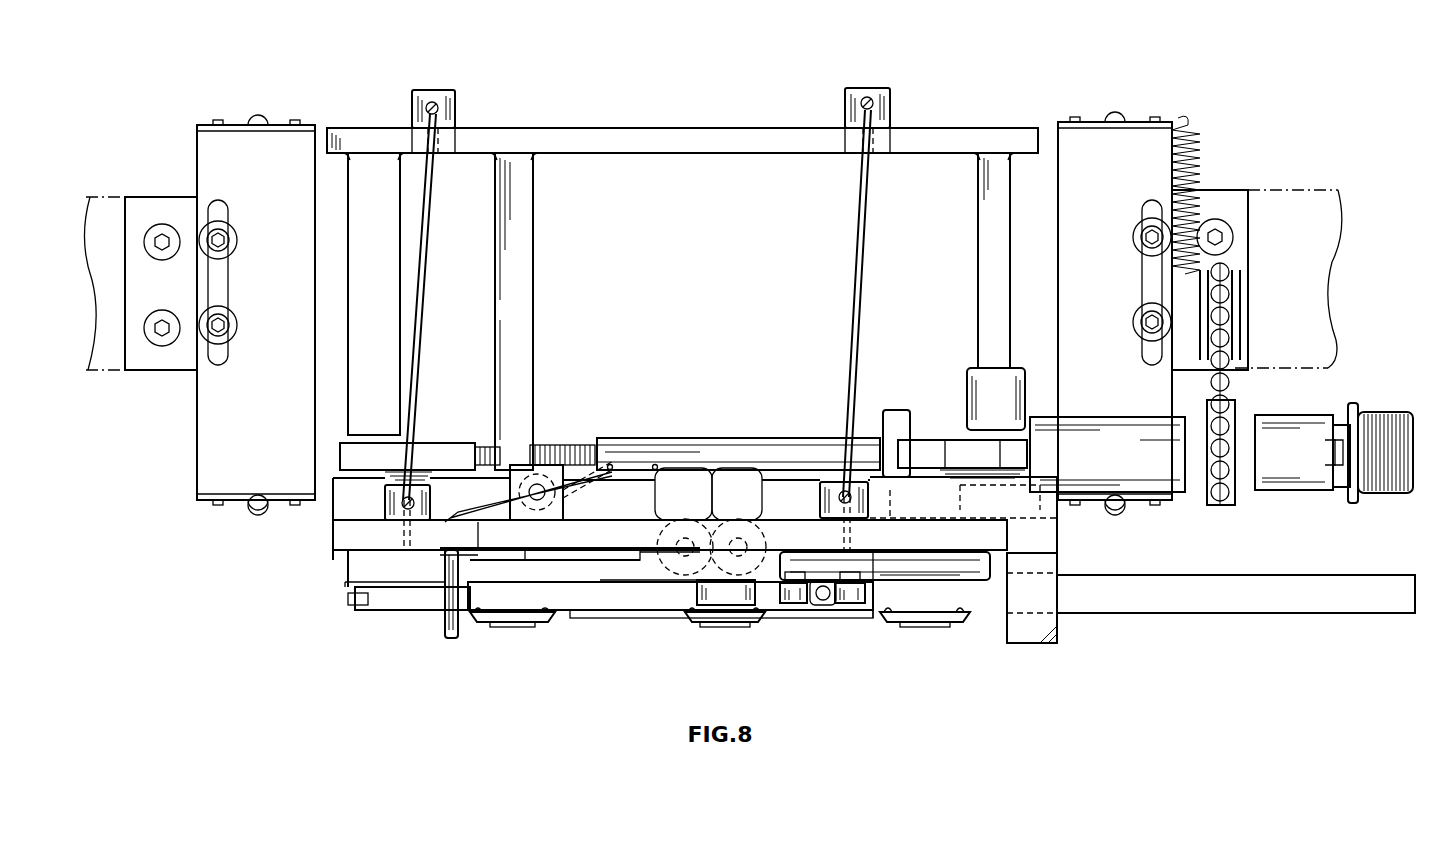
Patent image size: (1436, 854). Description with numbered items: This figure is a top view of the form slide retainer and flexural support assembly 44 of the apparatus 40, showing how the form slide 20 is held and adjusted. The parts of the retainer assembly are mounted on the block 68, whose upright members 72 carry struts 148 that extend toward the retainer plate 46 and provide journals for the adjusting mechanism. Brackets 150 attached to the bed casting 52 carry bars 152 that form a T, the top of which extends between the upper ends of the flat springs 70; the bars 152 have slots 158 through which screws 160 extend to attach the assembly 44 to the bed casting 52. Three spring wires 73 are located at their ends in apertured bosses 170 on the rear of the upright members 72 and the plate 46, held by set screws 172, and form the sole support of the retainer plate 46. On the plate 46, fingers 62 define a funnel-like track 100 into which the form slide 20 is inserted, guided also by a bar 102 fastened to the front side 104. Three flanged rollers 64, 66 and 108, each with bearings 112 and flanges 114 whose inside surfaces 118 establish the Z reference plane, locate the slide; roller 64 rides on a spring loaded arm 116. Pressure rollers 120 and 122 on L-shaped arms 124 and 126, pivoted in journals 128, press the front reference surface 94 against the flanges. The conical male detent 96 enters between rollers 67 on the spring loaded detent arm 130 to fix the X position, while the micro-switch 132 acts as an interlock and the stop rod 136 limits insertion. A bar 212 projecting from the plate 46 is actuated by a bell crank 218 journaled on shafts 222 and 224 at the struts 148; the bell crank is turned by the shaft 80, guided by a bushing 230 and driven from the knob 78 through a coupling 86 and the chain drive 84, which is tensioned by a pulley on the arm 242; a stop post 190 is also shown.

The form slide 20 is at (1272, 607).
The feed apparatus 40 is at (1332, 247).
The flexural support assembly 44 is at (682, 182).
The retainer plate 46 is at (366, 549).
The bed casting 52 is at (110, 372).
The fingers 62 is at (1044, 641).
The flanged roller 64 is at (728, 620).
The flanged roller 66 is at (926, 625).
The rollers 67 is at (795, 603).
The block 68 is at (972, 238).
The flat springs 70 is at (287, 126).
The upright members 72 is at (458, 140).
The spring wires 73 is at (422, 276).
The knob 78 is at (1380, 426).
The shaft 80 is at (1228, 412).
The chain drive 84 is at (1250, 430).
The coupling 86 is at (1336, 418).
The front reference surface 94 is at (1160, 614).
The conical male detent 96 is at (823, 602).
The funnel-like track 100 is at (1060, 574).
The bar 102 is at (640, 608).
The front side 104 is at (590, 553).
The flanged roller 108 is at (514, 622).
The bearings 112 is at (698, 589).
The flanges 114 is at (480, 615).
The spring loaded arm 116 is at (648, 585).
The inside surfaces 118 is at (546, 613).
The pressure roller 120 is at (738, 526).
The pressure roller 122 is at (684, 521).
The L-shaped arm 124 is at (722, 470).
The L-shaped arm 126 is at (645, 470).
The journals 128 is at (548, 496).
The detent arm 130 is at (893, 572).
The micro-switch 132 is at (400, 601).
The stop rod 136 is at (445, 629).
The struts 148 is at (516, 212).
The brackets 150 is at (188, 210).
The bars 152 is at (200, 162).
The slots 158 is at (228, 277).
The screws 160 is at (238, 240).
The apertured boss 170 is at (430, 93).
The set screws 172 is at (438, 106).
The stop post 190 is at (893, 422).
The bar 212 is at (346, 486).
The bell crank 218 is at (376, 456).
The shaft 222 is at (956, 446).
The shaft 224 is at (478, 456).
The bushing 230 is at (1108, 432).
The arm 242 is at (1241, 356).